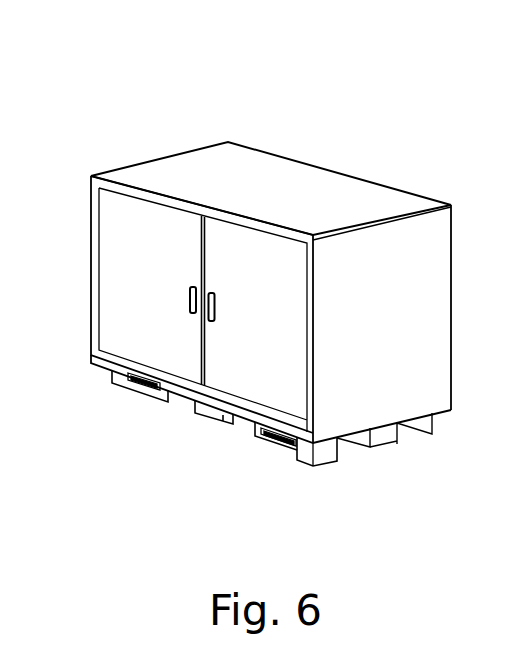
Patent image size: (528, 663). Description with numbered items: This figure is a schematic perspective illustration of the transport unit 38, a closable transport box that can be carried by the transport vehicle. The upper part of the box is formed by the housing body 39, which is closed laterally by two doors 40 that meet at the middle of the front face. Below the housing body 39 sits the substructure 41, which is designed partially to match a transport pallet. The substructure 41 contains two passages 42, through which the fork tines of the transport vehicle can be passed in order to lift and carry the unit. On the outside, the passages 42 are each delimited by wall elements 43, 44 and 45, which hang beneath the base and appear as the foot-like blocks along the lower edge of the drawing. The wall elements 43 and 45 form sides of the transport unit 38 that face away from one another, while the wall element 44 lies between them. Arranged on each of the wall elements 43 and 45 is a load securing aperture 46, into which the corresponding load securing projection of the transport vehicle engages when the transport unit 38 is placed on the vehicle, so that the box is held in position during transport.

The transport unit 38 is at (266, 291).
The housing body 39 is at (365, 185).
The doors 40 is at (225, 243).
The substructure 41 is at (270, 456).
The passages 42 is at (343, 445).
The wall element 43 is at (391, 489).
The wall element 44 is at (207, 408).
The wall element 45 is at (92, 433).
The load securing aperture 46 is at (142, 388).